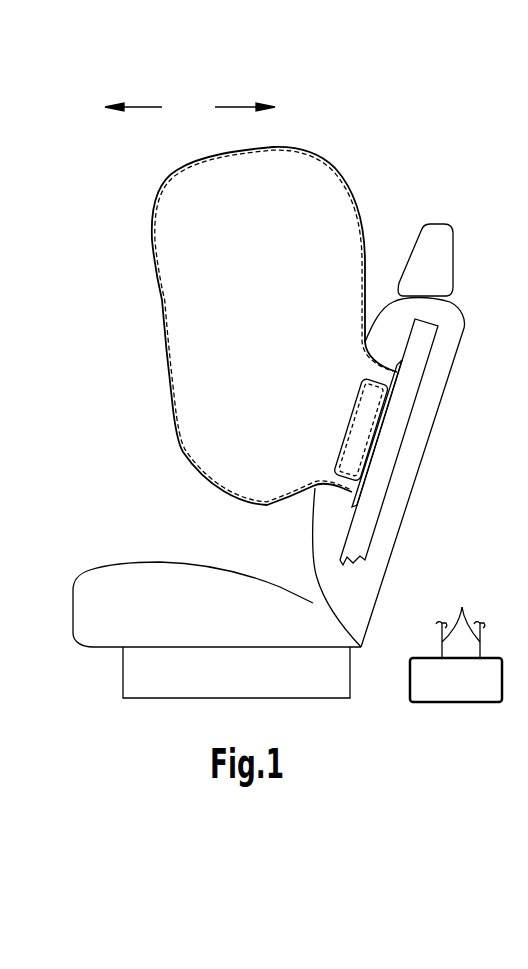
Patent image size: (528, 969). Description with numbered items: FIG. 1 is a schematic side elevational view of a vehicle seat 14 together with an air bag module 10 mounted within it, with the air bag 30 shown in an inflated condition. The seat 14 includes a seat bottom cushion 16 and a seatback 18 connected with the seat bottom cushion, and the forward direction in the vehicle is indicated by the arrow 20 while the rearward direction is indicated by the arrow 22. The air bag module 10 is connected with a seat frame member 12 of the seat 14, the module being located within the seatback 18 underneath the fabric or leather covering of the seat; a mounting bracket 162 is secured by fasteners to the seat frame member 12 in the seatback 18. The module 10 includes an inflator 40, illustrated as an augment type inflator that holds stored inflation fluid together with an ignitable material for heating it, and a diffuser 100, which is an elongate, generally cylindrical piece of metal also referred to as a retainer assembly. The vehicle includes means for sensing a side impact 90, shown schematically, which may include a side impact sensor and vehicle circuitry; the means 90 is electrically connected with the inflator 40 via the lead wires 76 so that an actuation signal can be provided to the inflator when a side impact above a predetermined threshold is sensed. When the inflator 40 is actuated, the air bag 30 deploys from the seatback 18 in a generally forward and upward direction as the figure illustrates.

The air bag module 10 is at (162, 439).
The seat frame member 12 is at (362, 525).
The seat 14 is at (176, 533).
The seat bottom cushion 16 is at (105, 596).
The seatback 18 is at (332, 520).
The arrow 20 is at (133, 95).
The arrow 22 is at (245, 95).
The air bag 30 is at (162, 324).
The inflator 40 is at (358, 437).
The lead wires 76 is at (462, 607).
The means for sensing a side impact 90 is at (452, 680).
The diffuser 100 is at (358, 390).
The mounting bracket 162 is at (402, 368).